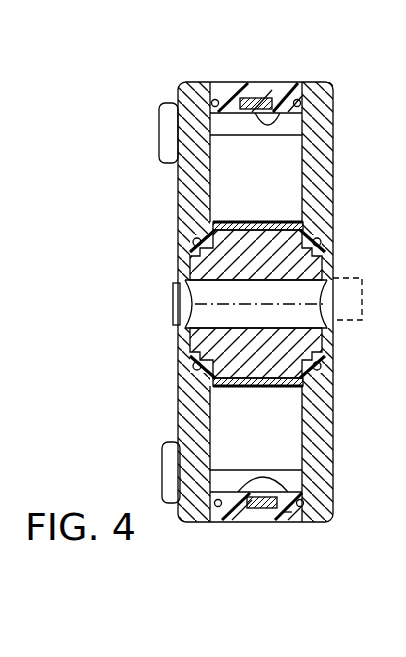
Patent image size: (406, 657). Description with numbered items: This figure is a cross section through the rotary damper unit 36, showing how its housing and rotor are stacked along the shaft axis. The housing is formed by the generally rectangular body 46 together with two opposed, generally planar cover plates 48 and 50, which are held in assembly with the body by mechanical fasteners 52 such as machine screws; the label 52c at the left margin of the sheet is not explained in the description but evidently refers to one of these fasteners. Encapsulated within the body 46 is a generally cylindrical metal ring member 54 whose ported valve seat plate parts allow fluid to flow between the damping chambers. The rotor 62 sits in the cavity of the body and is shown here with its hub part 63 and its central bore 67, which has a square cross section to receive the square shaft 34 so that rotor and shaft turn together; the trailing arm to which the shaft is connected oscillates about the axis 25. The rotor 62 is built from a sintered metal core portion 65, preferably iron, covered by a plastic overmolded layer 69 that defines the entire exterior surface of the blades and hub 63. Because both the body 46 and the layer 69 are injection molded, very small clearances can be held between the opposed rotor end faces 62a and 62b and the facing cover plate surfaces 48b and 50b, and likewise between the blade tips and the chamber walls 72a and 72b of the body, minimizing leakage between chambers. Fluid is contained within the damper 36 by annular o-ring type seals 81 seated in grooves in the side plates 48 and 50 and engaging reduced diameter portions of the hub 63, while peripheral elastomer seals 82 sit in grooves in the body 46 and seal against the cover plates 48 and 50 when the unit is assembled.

The damper unit 36 is at (268, 38).
The body 46 is at (232, 82).
The cover plate 48 is at (333, 483).
The cover plate face 48b is at (300, 432).
The cover plate 50 is at (178, 213).
The cover plate face 50b is at (213, 425).
The mechanical fasteners 52 is at (158, 143).
The side button 52c is at (13, 354).
The metal ring member 54 is at (265, 508).
The rotor 62 is at (288, 176).
The rotor end face 62a is at (210, 170).
The rotor end face 62b is at (305, 137).
The hub part 63 is at (267, 217).
The core portion 65 is at (236, 388).
The central bore 67 is at (303, 283).
The plastic overmolded layer 69 is at (233, 222).
The chamber wall 72a is at (293, 510).
The chamber wall 72b is at (272, 112).
The o-ring type seals 81 is at (190, 234).
The peripheral elastomer seals 82 is at (300, 102).
The axis 25 is at (200, 328).
The shaft 34 is at (356, 278).